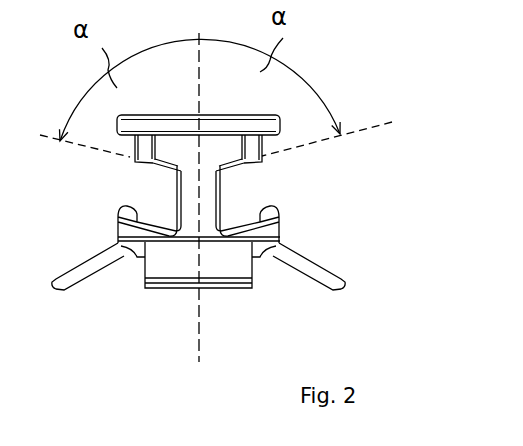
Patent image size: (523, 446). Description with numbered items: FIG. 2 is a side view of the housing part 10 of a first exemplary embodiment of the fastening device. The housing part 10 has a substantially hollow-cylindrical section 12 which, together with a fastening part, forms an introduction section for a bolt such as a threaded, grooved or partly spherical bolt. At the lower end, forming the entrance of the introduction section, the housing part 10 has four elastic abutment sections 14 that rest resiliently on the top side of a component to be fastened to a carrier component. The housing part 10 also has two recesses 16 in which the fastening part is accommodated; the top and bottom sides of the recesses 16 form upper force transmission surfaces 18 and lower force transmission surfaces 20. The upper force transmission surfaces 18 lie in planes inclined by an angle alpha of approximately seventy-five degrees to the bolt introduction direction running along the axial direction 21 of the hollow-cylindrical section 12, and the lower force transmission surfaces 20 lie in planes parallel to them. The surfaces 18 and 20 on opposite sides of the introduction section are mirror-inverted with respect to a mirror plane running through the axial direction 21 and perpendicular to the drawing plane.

The housing part 10 is at (322, 74).
The hollow-cylindrical section 12 is at (172, 132).
The elastic abutment sections 14 is at (325, 270).
The recesses 16 is at (152, 190).
The upper force transmission surfaces 18 is at (160, 166).
The lower force transmission surfaces 20 is at (113, 213).
The axial direction 21 is at (203, 332).